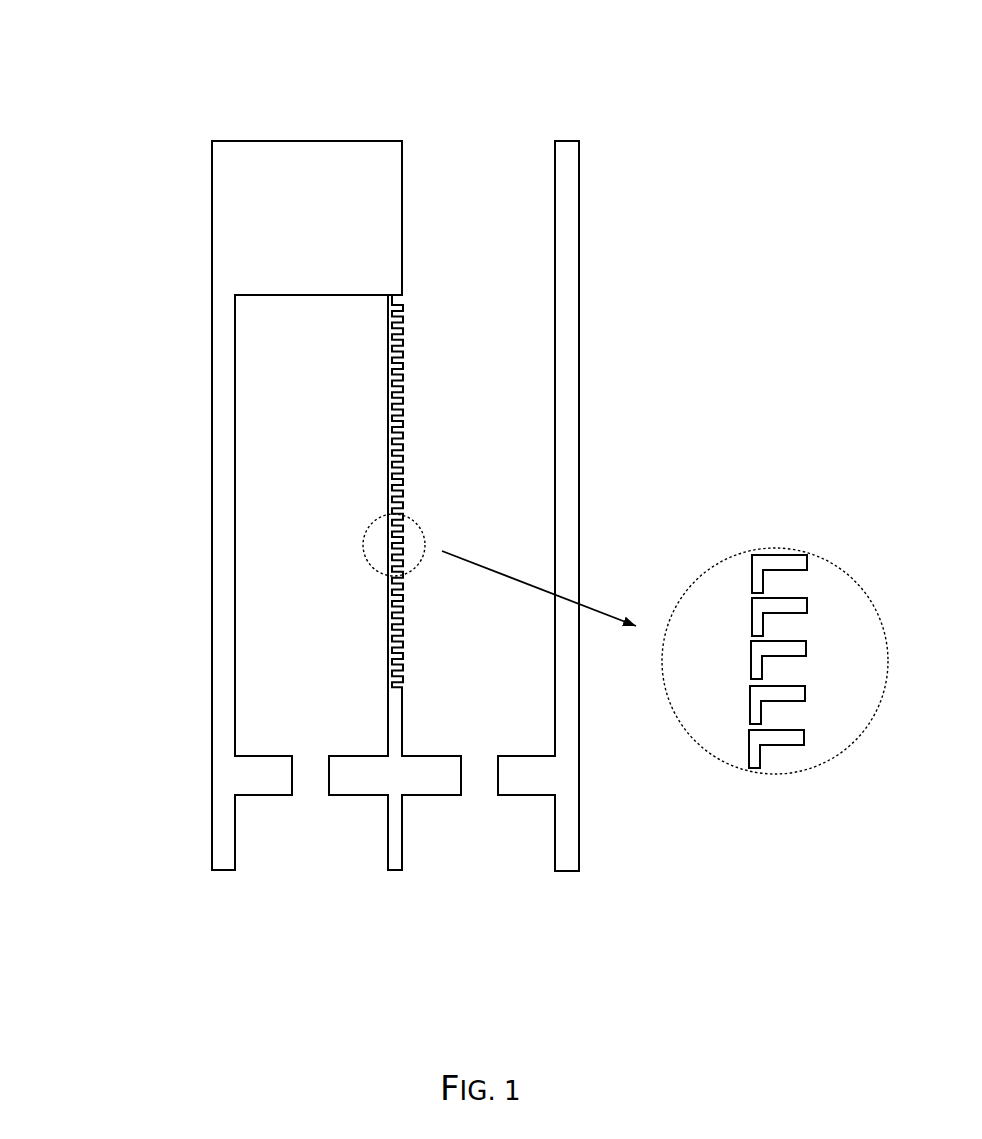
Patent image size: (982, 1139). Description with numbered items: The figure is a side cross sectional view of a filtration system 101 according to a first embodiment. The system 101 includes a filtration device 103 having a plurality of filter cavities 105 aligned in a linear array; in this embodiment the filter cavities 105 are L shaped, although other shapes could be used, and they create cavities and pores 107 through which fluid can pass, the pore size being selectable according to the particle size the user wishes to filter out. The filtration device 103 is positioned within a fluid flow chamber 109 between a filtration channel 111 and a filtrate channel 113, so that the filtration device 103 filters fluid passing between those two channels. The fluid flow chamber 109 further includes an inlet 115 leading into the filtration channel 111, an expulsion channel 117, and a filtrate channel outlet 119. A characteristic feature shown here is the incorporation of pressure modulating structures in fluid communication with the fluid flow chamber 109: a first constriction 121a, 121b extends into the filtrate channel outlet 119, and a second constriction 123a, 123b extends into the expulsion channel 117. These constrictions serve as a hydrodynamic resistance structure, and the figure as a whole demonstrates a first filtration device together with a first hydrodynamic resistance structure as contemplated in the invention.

The filtration system 101 is at (126, 50).
The filtration device 103 is at (372, 380).
The filter cavities 105 is at (779, 553).
The pores 107 is at (739, 587).
The fluid flow chamber 109 is at (212, 250).
The filtration channel 111 is at (523, 416).
The filtrate channel 113 is at (258, 431).
The inlet 115 is at (476, 133).
The expulsion channel 117 is at (492, 853).
The filtrate channel outlet 119 is at (311, 860).
The first constriction 121a is at (257, 759).
The first constriction 121b is at (350, 794).
The second constriction 123a is at (427, 758).
The second constriction 123b is at (522, 795).